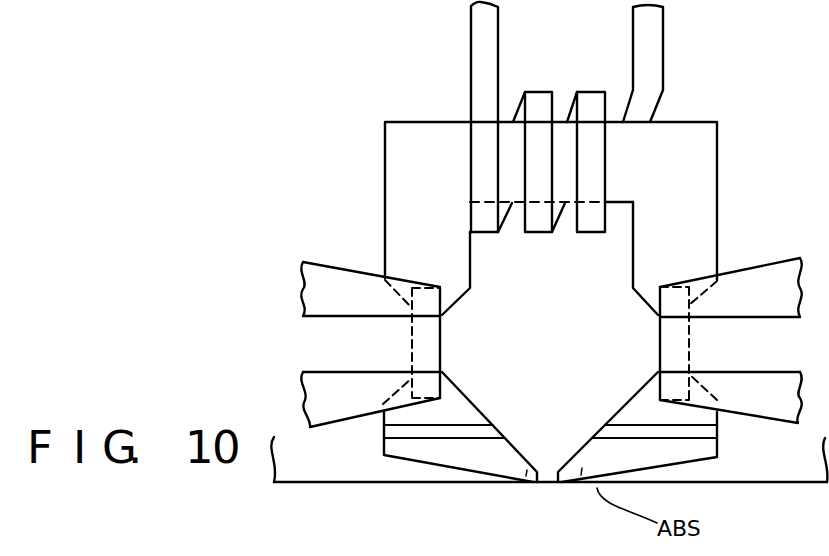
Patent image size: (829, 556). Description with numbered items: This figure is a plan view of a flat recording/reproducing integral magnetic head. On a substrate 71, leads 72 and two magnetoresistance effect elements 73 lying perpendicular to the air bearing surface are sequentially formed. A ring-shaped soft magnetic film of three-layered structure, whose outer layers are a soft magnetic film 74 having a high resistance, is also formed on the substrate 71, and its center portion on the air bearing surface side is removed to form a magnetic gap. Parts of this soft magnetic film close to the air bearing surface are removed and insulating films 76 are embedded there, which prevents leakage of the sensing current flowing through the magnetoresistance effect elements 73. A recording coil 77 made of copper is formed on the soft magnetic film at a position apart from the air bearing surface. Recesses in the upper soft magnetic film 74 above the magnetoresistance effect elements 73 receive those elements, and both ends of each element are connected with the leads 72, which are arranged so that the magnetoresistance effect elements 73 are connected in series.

The substrate 71 is at (320, 470).
The leads 72 is at (340, 283).
The magnetoresistance effect elements 73 is at (667, 350).
The soft magnetic film having a high resistance 74 is at (427, 140).
The insulating films 76 is at (607, 428).
The recording coil 77 is at (653, 50).